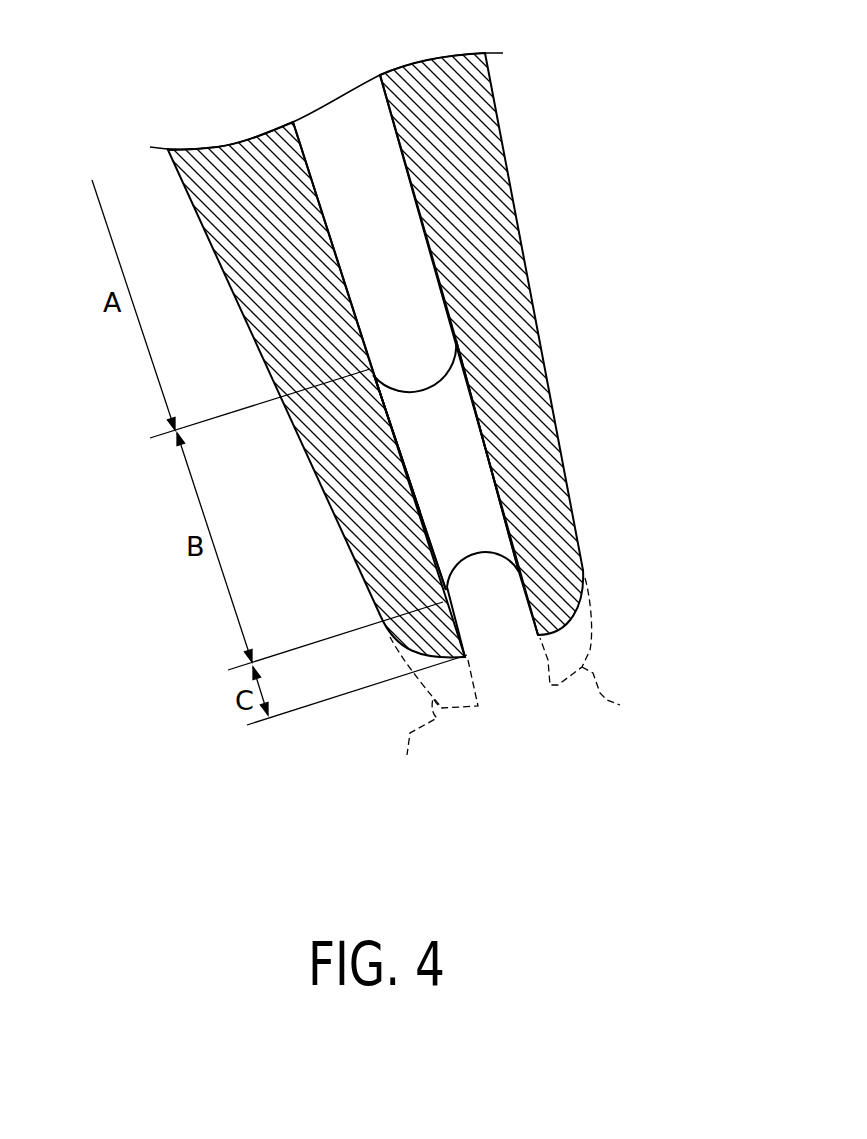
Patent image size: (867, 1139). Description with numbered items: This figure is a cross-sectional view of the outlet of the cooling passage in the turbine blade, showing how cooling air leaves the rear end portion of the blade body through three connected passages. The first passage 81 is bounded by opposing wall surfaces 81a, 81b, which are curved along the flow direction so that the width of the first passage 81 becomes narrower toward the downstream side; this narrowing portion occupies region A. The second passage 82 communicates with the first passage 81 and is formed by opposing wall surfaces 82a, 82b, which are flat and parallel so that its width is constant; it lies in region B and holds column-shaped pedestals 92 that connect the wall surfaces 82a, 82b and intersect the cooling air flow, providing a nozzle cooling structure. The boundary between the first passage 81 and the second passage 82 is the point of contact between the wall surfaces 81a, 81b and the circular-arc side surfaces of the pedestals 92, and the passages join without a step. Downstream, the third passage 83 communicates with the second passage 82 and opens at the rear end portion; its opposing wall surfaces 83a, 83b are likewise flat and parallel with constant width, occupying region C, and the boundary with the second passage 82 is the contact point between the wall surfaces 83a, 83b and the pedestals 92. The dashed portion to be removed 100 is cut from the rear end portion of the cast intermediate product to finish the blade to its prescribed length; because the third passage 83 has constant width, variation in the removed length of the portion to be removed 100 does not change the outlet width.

The first passage 81 is at (393, 267).
The wall surface 81a is at (306, 167).
The wall surface 81b is at (405, 157).
The second passage 82 is at (457, 487).
The wall surface 82a is at (424, 517).
The wall surface 82b is at (474, 412).
The third passage 83 is at (500, 617).
The wall surface 83a is at (463, 638).
The wall surface 83b is at (535, 623).
The pedestal 92 is at (437, 443).
The portion to be removed 100 is at (527, 682).